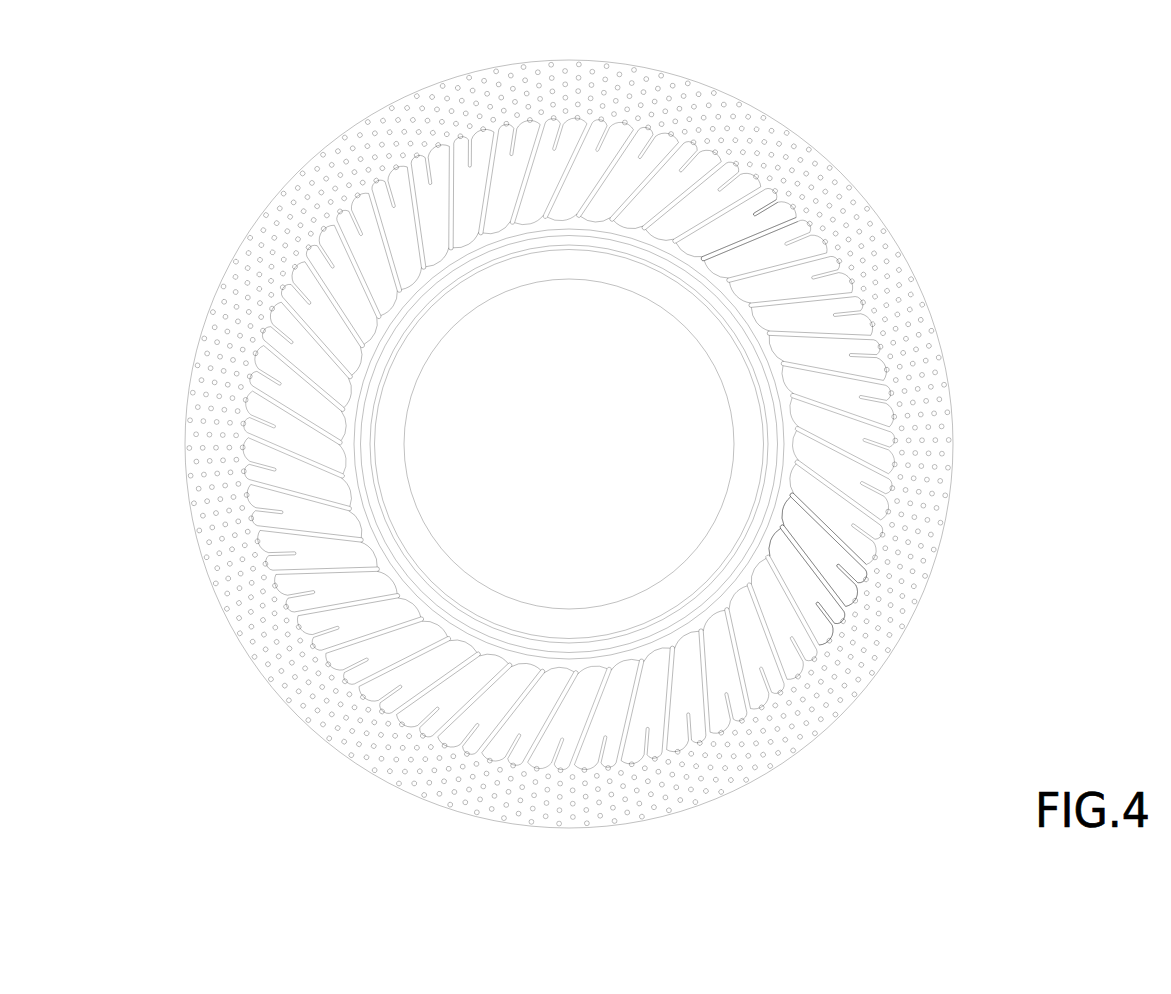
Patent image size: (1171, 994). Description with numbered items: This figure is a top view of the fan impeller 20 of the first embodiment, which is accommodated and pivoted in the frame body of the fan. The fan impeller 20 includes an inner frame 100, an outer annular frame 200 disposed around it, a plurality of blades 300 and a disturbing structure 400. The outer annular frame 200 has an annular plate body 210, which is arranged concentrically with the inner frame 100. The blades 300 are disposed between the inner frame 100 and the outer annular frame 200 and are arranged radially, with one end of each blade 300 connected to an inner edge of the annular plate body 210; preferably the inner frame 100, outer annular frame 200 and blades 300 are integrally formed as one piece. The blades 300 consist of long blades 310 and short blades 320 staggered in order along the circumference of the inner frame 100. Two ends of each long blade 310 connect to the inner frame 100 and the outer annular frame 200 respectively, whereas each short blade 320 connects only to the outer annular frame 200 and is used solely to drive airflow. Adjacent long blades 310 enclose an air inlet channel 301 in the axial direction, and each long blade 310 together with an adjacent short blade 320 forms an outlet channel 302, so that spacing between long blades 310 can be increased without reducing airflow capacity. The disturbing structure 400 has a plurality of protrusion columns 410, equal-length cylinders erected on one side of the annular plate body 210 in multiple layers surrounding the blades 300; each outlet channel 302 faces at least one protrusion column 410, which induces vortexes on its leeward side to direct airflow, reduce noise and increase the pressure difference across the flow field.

The fan impeller 20 is at (272, 87).
The inner frame 100 is at (733, 417).
The outer annular frame 200 is at (635, 444).
The annular plate body 210 is at (888, 228).
The blades 300 is at (630, 408).
The air inlet channel 301 is at (810, 562).
The outlet channel 302 is at (824, 630).
The long blade 310 is at (733, 232).
The short blade 320 is at (768, 209).
The disturbing structure 400 is at (635, 444).
The protrusion columns 410 is at (930, 446).